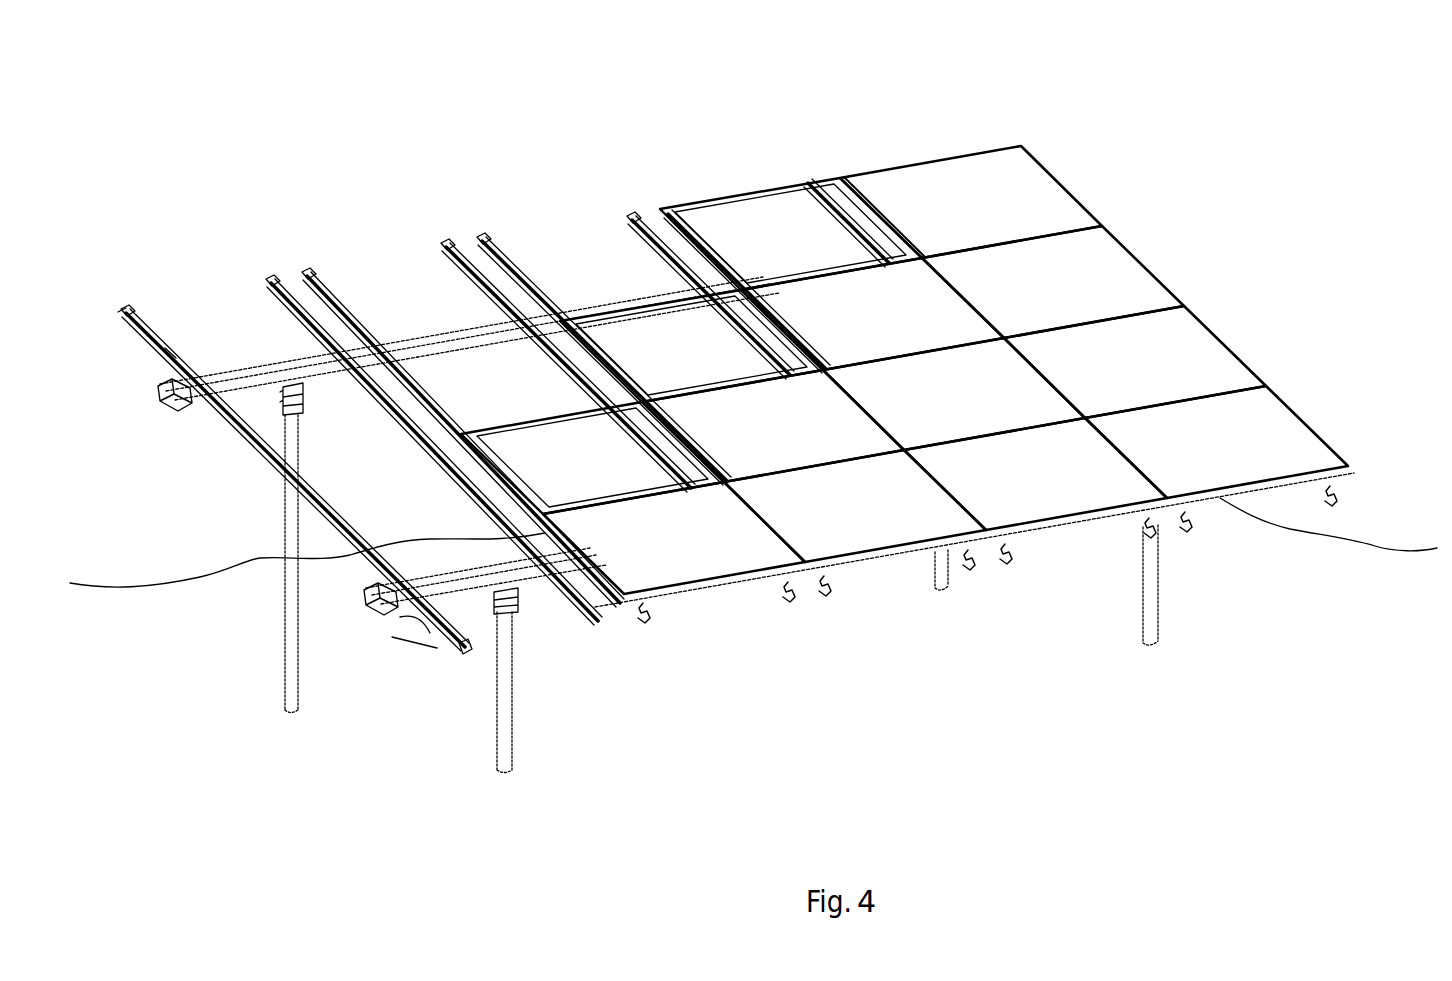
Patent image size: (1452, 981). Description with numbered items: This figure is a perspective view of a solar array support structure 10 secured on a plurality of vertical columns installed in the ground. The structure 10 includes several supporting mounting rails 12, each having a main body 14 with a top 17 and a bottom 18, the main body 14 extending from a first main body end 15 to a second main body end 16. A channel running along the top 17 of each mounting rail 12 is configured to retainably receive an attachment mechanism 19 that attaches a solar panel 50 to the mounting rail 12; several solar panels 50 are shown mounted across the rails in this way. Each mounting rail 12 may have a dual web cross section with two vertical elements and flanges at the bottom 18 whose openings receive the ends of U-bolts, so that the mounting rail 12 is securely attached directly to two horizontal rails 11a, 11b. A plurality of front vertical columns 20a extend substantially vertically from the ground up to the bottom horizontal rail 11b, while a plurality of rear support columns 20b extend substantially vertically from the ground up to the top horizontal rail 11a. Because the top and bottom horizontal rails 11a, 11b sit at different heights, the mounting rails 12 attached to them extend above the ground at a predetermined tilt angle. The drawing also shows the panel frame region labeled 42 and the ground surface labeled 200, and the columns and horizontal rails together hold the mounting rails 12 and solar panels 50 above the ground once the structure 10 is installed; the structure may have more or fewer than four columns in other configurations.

The solar array support structure 10 is at (386, 188).
The top horizontal rail 11a is at (432, 340).
The bottom horizontal rail 11b is at (462, 572).
The mounting rail 12 is at (122, 311).
The main body 14 is at (260, 458).
The first main body end 15 is at (116, 309).
The second main body end 16 is at (463, 656).
The top 17 is at (170, 352).
The bottom 18 is at (205, 413).
The attachment mechanism 19 is at (645, 603).
The front vertical column 20a is at (512, 736).
The rear support column 20b is at (290, 657).
The panel frame 42 is at (520, 348).
The solar panel 50 is at (985, 185).
The ground surface 200 is at (1363, 567).